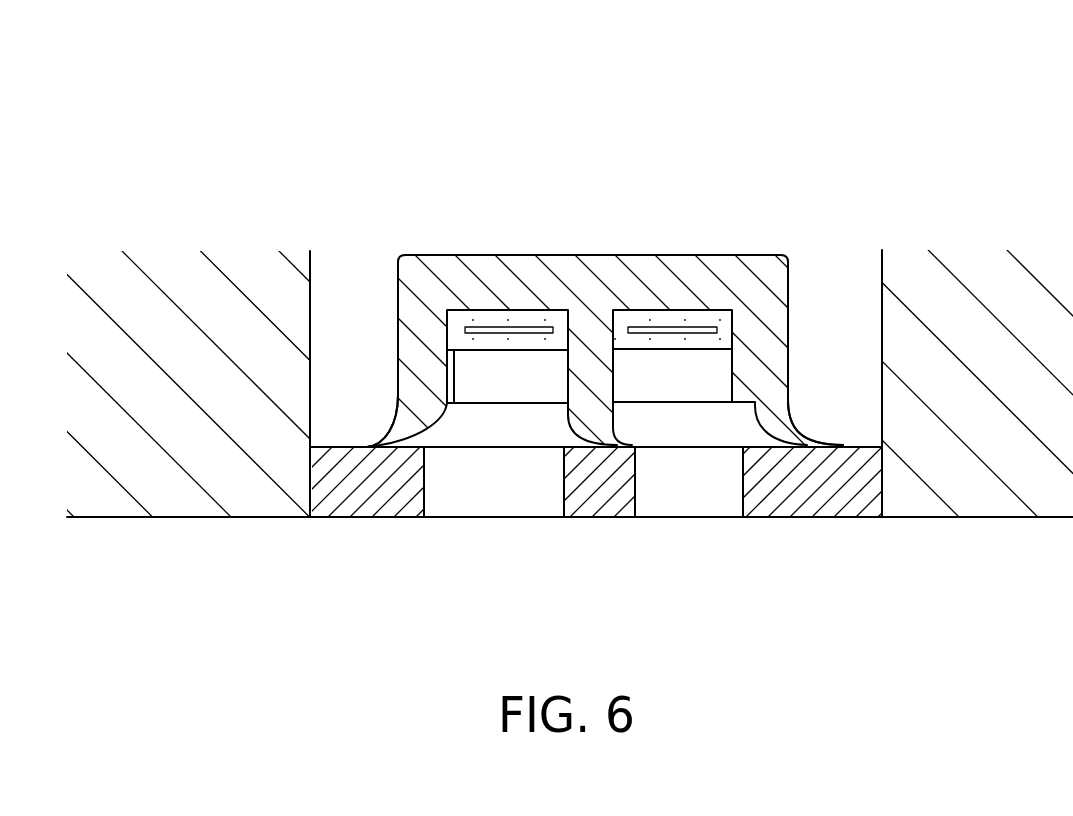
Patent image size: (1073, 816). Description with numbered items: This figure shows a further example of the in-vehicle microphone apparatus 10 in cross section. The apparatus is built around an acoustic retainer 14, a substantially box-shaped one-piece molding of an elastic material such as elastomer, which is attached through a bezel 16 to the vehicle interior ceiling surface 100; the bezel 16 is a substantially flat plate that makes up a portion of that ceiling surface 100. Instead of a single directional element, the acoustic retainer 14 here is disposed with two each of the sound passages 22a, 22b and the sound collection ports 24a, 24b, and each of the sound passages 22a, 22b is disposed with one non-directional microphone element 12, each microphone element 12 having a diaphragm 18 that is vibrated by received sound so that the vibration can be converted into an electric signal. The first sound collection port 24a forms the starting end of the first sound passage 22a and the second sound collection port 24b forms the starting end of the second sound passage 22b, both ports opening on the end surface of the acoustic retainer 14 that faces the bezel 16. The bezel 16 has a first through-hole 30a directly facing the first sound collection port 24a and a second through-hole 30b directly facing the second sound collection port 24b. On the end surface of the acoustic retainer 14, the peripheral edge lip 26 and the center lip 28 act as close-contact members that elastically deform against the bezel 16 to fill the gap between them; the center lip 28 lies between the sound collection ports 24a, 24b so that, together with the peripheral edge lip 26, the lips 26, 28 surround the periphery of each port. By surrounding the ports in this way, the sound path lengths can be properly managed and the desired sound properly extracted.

The in-vehicle microphone apparatus 10 is at (547, 112).
The microphone element 12 is at (517, 317).
The acoustic retainer 14 is at (763, 263).
The bezel 16 is at (358, 508).
The diaphragm 18 is at (473, 320).
The first sound passage 22a is at (538, 365).
The second sound passage 22b is at (708, 367).
The first sound collection port 24a is at (475, 425).
The second sound collection port 24b is at (747, 433).
The peripheral edge lip 26 is at (390, 425).
The center lip 28 is at (605, 433).
The first through-hole 30a is at (482, 500).
The second through-hole 30b is at (693, 494).
The vehicle interior ceiling surface 100 is at (165, 502).